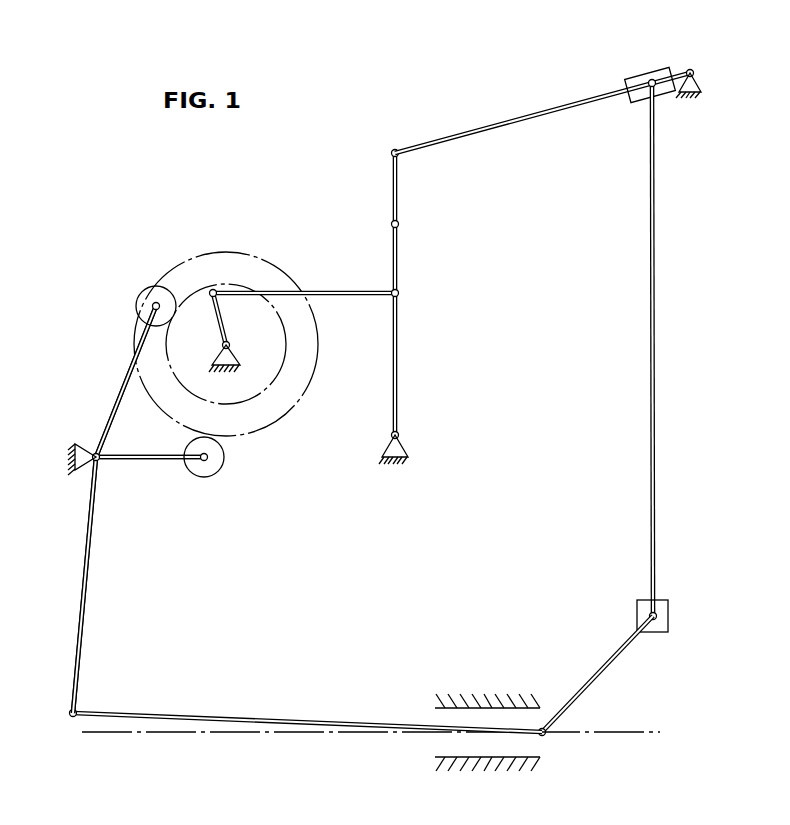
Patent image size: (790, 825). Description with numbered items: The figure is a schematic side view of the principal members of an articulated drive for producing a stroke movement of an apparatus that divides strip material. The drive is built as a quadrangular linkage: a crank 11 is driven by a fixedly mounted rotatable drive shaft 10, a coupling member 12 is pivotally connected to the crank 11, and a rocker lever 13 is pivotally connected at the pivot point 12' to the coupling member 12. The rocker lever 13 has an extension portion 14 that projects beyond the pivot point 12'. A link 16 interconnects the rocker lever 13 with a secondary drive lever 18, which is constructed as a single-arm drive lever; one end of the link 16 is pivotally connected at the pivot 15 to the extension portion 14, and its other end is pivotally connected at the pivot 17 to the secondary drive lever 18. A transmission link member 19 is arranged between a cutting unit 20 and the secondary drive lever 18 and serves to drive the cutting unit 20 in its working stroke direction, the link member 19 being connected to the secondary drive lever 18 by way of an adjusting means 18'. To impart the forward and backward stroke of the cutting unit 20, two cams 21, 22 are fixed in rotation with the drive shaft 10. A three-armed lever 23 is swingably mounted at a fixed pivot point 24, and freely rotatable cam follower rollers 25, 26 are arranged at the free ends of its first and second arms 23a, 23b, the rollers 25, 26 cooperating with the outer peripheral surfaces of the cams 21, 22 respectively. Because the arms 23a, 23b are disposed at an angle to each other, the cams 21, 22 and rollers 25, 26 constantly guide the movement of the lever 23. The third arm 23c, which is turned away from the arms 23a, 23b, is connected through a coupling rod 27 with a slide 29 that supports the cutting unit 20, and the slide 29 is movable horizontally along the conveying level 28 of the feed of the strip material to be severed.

The drive shaft 10 is at (230, 342).
The crank 11 is at (215, 320).
The coupling member 12 is at (304, 274).
The pivot point 12' is at (417, 302).
The rocker lever 13 is at (396, 370).
The extension portion 14 is at (399, 268).
The pivot connection 15 is at (399, 224).
The link 16 is at (397, 186).
The pivot connection 17 is at (396, 148).
The secondary drive lever 18 is at (548, 112).
The adjusting means 18' is at (640, 67).
The transmission link member 19 is at (655, 403).
The cutting unit 20 is at (659, 632).
The cam 21 is at (267, 372).
The cam 22 is at (260, 422).
The three-armed lever 23 is at (124, 475).
The first arm 23a is at (120, 377).
The second arm 23b is at (156, 452).
The third arm 23c is at (88, 520).
The fixed pivot point 24 is at (93, 449).
The cam follower roller 25 is at (147, 297).
The cam follower roller 26 is at (213, 470).
The coupling rod 27 is at (302, 720).
The conveying level 28 is at (235, 734).
The slide 29 is at (541, 703).